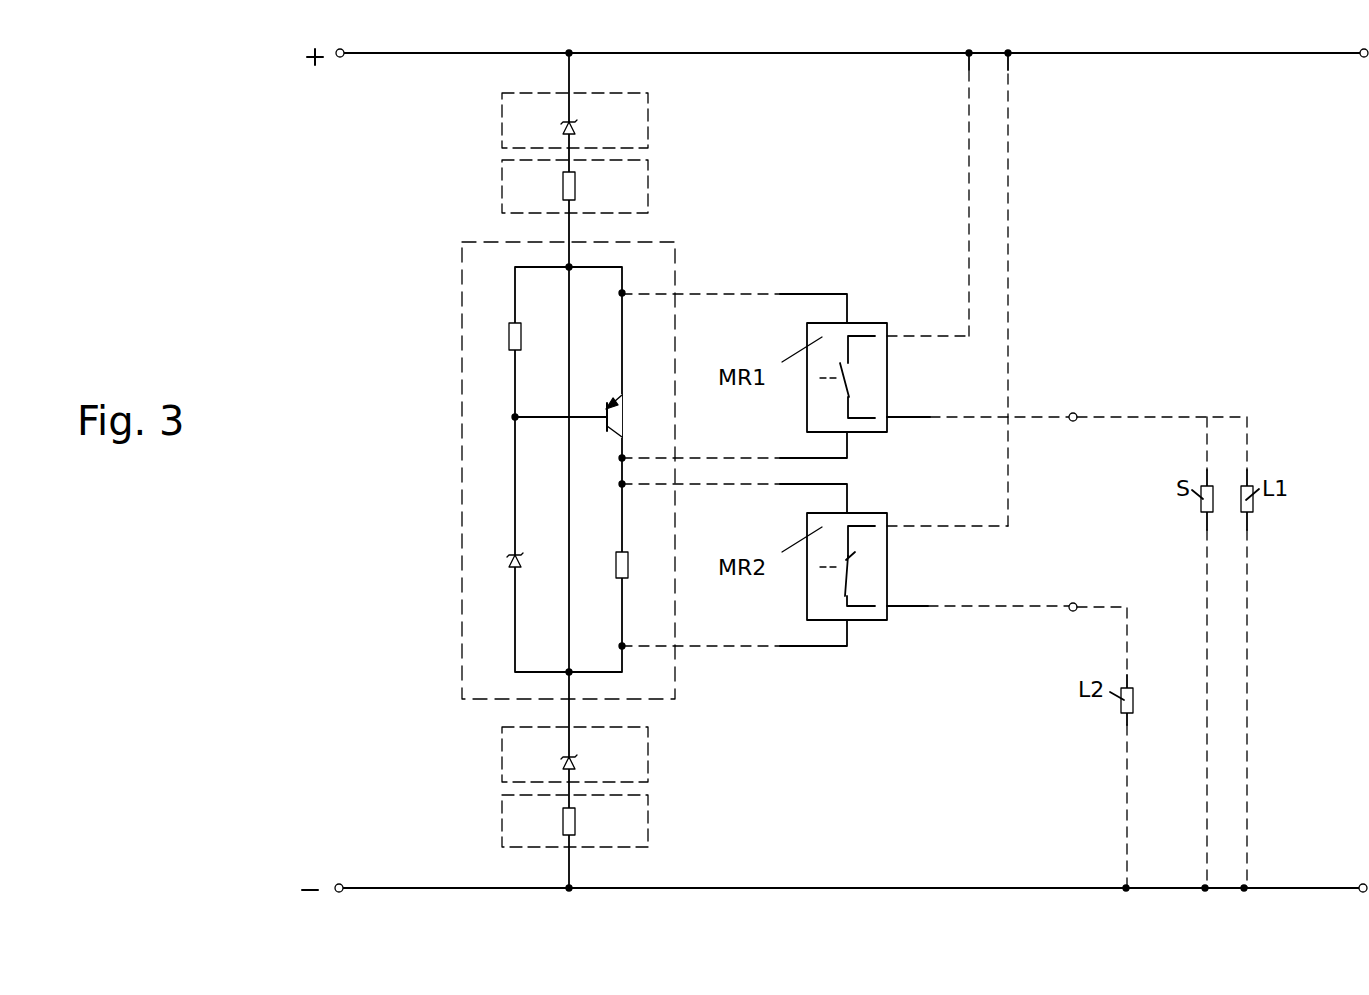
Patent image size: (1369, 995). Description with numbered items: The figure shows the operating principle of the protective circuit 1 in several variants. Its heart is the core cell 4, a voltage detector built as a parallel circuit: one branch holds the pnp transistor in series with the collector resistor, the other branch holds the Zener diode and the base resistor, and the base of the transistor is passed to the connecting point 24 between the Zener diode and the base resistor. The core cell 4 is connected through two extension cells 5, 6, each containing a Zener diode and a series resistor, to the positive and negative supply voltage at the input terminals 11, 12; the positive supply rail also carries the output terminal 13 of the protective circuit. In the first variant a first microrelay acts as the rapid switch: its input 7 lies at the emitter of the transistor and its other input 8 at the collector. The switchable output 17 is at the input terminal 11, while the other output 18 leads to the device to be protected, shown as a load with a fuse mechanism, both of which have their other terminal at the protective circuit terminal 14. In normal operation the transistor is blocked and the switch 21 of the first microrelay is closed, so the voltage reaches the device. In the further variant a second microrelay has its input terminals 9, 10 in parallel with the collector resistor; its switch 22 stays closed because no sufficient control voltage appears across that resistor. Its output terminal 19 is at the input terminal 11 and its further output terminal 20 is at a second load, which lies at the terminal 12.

The protective circuit 1 is at (831, 469).
The core cell 4 is at (515, 470).
The extension cell 5 is at (517, 120).
The extension cell 6 is at (517, 755).
The input of microrelay MR1 7 is at (733, 311).
The input of microrelay MR1 8 is at (733, 444).
The input terminal of microrelay MR2 9 is at (733, 502).
The input terminal of microrelay MR2 10 is at (733, 633).
The input terminal 11 is at (356, 71).
The input terminal 12 is at (346, 870).
The positive output terminal 13 is at (1350, 71).
The protective circuit terminal 14 is at (1347, 871).
The switchable output 17 is at (928, 194).
The output of microrelay MR1 18 is at (978, 436).
The output terminal of microrelay MR2 19 is at (947, 289).
The output terminal of microrelay MR2 20 is at (978, 626).
The switch 21 is at (860, 376).
The switch 22 is at (860, 566).
The connecting point 24 is at (498, 417).